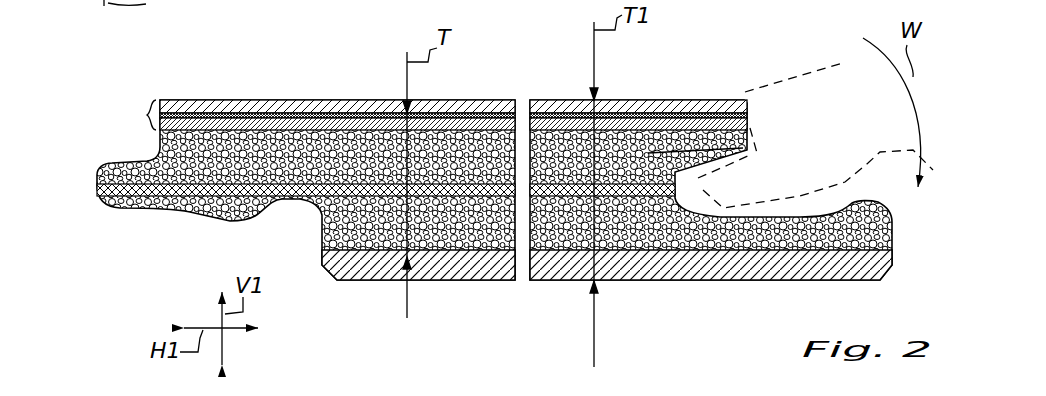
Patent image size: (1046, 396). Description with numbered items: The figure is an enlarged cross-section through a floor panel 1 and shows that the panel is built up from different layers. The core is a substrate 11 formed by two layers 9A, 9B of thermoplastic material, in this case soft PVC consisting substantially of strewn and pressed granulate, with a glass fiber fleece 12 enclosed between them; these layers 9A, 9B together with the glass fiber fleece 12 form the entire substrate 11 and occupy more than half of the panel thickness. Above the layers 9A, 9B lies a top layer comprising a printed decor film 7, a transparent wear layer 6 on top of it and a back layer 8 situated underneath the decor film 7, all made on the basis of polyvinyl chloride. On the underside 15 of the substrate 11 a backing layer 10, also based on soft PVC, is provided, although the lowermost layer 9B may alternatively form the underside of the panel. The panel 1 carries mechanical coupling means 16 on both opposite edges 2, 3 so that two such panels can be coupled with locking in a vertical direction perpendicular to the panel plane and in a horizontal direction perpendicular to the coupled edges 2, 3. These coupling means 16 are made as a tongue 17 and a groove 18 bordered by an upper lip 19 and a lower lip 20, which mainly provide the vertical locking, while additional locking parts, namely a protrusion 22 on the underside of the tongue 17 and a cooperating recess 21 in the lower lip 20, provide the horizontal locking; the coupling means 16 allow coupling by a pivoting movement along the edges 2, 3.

The floor panel 1 is at (233, 242).
The edge 2 is at (133, 140).
The edge 3 is at (144, 110).
The transparent wear layer 6 is at (290, 100).
The printed decor film 7 is at (393, 112).
The back layer 8 is at (245, 125).
The substrate layer 9A is at (437, 160).
The lowermost substrate layer 9B is at (360, 218).
The backing layer 10 is at (449, 266).
The substrate 11 is at (380, 232).
The glass fiber fleece 12 is at (565, 245).
The underside of the substrate 15 is at (491, 252).
The mechanical coupling means 16 is at (132, 231).
The tongue 17 is at (125, 177).
The groove 18 is at (700, 178).
The upper lip 19 is at (648, 153).
The lower lip 20 is at (748, 232).
The recess 21 is at (827, 217).
The protrusion 22 is at (215, 218).